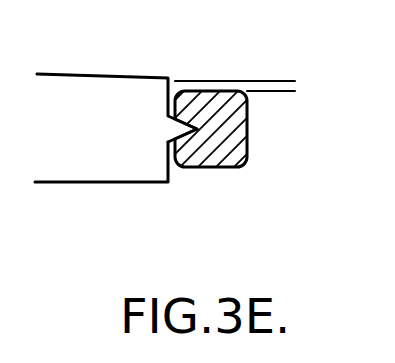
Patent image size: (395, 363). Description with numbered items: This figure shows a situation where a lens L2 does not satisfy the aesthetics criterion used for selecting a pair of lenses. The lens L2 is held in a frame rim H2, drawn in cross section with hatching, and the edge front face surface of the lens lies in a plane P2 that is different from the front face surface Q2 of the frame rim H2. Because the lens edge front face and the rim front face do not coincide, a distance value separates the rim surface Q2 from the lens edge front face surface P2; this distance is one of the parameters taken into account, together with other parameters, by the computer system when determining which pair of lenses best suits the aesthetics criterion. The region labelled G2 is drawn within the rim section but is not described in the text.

The plane of lens edge front face surface P2 is at (88, 77).
The lens L2 is at (75, 150).
The front face surface of frame rim Q2 is at (211, 133).
The groove G2 is at (205, 58).
The frame rim H2 is at (247, 143).